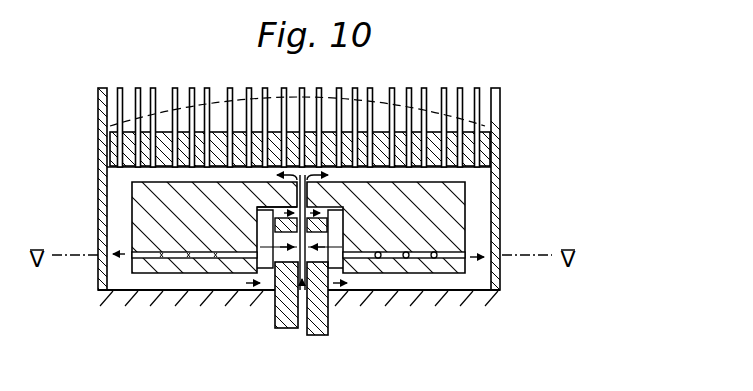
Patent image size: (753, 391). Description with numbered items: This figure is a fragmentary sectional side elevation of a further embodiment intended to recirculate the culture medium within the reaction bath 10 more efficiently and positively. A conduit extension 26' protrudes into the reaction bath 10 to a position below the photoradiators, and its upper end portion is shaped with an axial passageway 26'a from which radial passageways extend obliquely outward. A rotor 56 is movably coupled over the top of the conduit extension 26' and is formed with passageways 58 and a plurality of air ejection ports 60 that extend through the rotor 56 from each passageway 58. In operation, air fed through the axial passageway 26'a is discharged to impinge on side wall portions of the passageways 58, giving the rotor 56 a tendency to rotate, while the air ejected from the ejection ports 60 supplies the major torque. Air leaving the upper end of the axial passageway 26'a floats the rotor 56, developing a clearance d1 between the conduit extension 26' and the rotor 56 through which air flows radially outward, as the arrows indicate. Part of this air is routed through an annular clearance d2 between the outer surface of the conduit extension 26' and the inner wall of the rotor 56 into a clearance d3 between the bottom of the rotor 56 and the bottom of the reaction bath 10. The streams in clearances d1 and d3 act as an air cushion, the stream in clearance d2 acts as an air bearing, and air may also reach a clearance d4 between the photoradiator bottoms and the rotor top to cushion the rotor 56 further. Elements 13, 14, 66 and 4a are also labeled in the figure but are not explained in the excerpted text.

The reaction bath 10 is at (98, 158).
The fins 13 is at (122, 121).
The heat sink base plate 14 is at (478, 143).
The rotor 56 is at (463, 229).
The passageways 58 is at (236, 270).
The air ejection ports 60 is at (380, 262).
The gap cover 66 is at (398, 207).
The valve plates 4a is at (262, 246).
The axial passageway 26'a is at (375, 230).
The conduit extension 26' is at (375, 230).
The clearance d1 is at (275, 212).
The annular clearance d2 is at (256, 218).
The clearance d3 is at (198, 276).
The clearance d4 is at (362, 172).